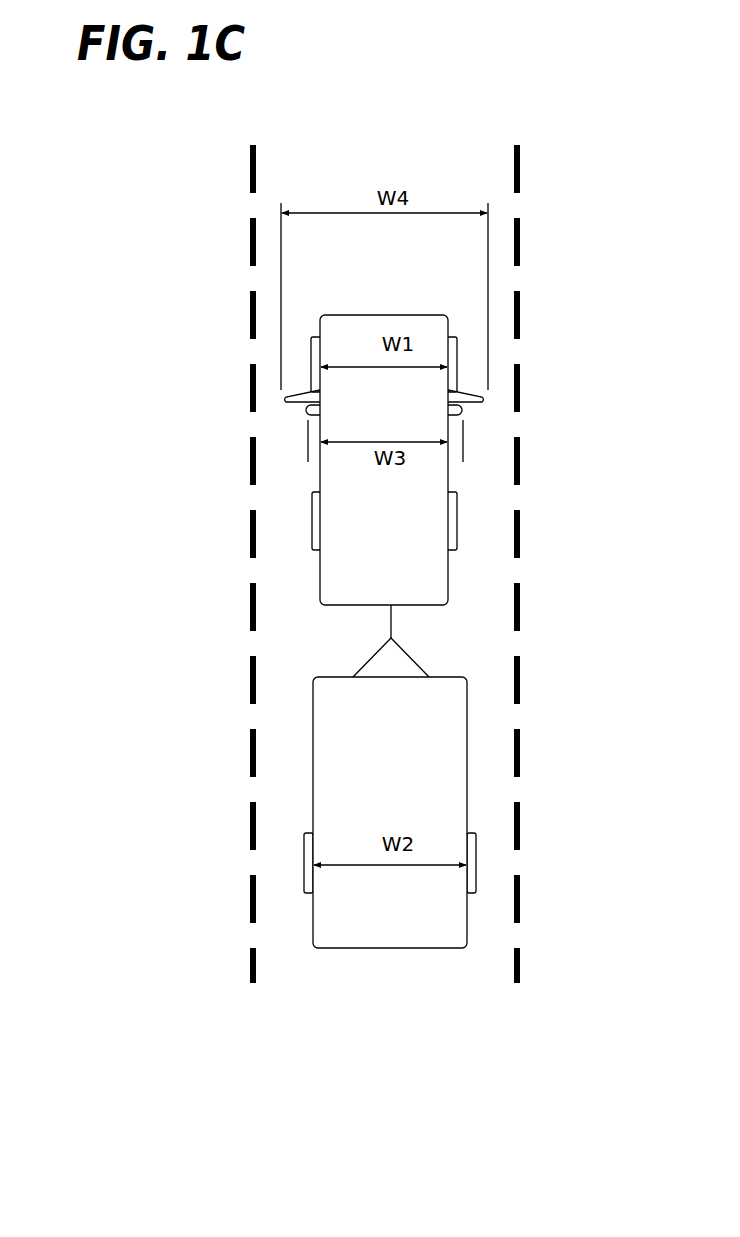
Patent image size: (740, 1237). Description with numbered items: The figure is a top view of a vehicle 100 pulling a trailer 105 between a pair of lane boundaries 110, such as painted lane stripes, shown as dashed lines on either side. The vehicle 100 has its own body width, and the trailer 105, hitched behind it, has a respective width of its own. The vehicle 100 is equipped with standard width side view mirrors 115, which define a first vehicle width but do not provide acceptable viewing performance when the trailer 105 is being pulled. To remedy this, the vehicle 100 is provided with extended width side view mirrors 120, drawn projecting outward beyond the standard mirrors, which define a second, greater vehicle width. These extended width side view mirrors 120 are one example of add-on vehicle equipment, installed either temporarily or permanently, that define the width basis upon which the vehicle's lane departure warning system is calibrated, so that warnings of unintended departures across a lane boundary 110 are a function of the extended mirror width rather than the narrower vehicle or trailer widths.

The vehicle 100 is at (432, 323).
The trailer 105 is at (373, 925).
The lane boundary 110 is at (248, 962).
The standard width side view mirrors 115 is at (455, 413).
The extended width side view mirrors 120 is at (483, 405).